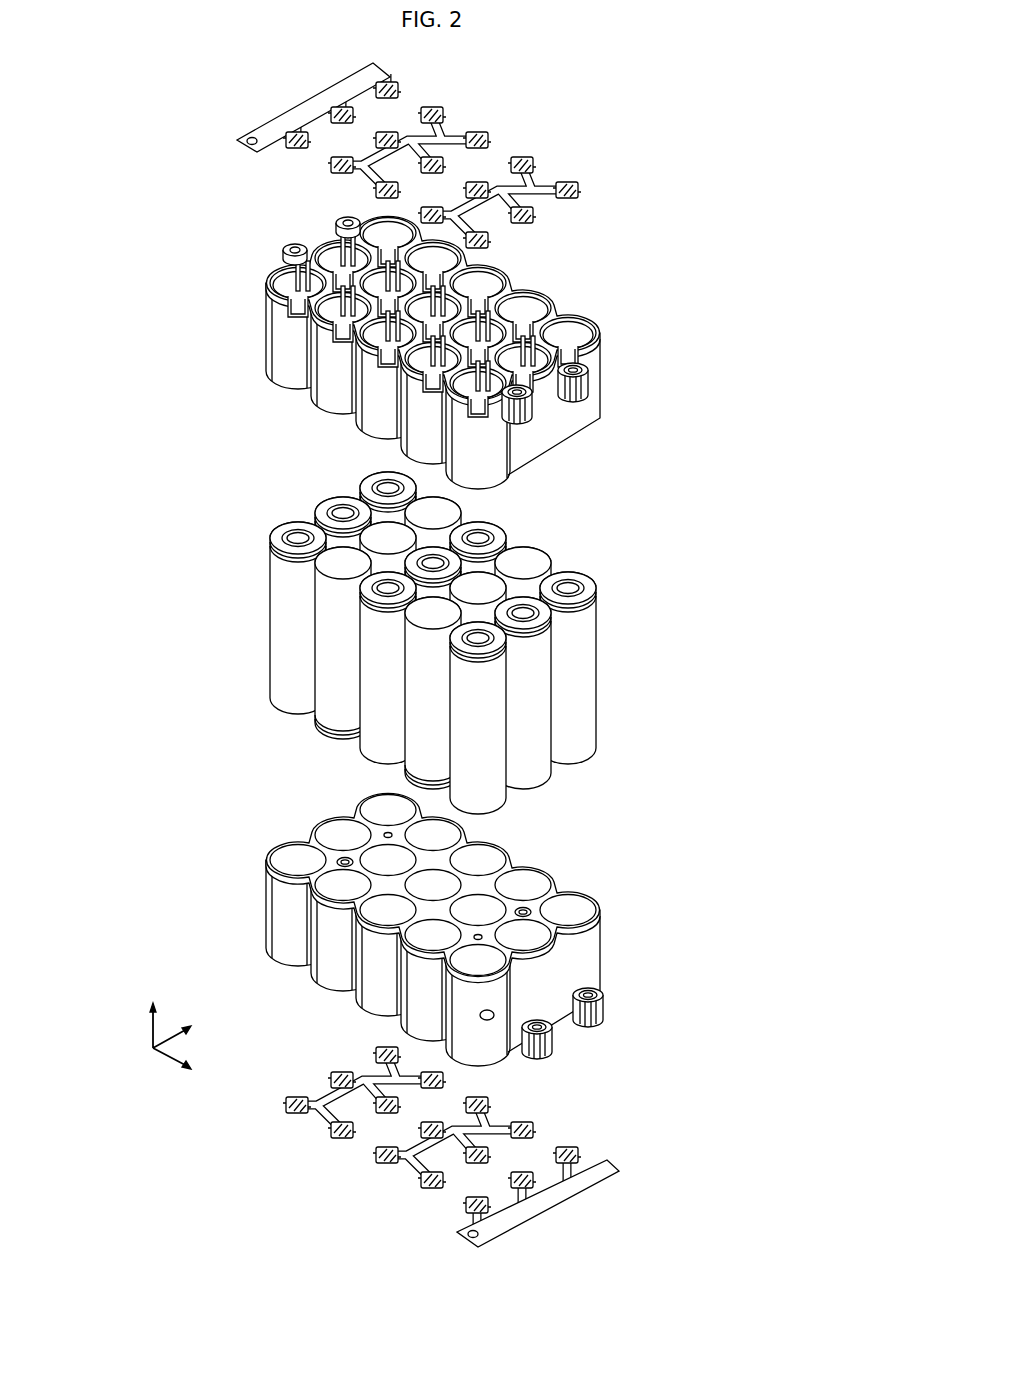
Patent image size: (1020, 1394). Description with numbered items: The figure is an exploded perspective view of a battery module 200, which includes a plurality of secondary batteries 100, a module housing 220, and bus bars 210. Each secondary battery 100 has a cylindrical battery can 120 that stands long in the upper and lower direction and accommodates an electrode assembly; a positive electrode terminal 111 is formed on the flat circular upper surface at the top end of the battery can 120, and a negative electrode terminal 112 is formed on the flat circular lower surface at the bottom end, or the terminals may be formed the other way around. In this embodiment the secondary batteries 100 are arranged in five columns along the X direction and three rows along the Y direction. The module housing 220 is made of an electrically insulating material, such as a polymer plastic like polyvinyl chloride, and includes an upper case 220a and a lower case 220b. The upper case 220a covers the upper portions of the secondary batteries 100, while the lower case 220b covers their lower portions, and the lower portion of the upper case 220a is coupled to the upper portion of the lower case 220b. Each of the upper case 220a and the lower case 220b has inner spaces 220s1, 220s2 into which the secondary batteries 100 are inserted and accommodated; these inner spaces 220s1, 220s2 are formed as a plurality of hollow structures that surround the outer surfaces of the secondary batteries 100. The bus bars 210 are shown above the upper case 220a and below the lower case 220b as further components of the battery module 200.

The battery module 200 is at (147, 91).
The bus bar 210 is at (475, 111).
The module housing 220 is at (716, 405).
The upper case 220a is at (489, 352).
The lower case 220b is at (450, 929).
The inner space 220s1 is at (533, 305).
The inner space 220s2 is at (290, 861).
The secondary battery 100 is at (424, 643).
The positive electrode terminal 111 is at (574, 586).
The negative electrode terminal 112 is at (534, 556).
The battery can 120 is at (603, 661).